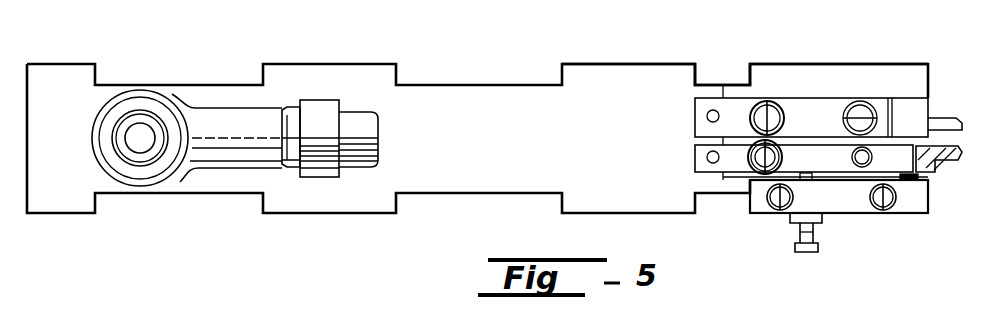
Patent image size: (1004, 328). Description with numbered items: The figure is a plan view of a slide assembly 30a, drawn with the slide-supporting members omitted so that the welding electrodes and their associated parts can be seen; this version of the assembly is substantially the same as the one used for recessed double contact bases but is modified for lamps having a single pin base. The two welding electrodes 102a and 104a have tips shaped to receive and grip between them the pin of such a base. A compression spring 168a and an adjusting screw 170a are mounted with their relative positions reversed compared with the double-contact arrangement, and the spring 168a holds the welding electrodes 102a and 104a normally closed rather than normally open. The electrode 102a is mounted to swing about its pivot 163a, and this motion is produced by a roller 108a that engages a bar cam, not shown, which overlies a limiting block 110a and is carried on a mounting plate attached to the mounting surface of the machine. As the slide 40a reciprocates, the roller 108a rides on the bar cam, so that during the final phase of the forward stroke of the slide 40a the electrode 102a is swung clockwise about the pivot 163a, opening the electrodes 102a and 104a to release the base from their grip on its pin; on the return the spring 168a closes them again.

The slide assembly 30a is at (467, 68).
The slide 40a is at (603, 74).
The welding electrode 104a is at (933, 116).
The welding electrode 102a is at (956, 164).
The compression spring 168a is at (920, 178).
The roller 108a is at (757, 171).
The limiting block 110a is at (780, 210).
The pivot 163a is at (862, 165).
The adjusting screw 170a is at (818, 248).